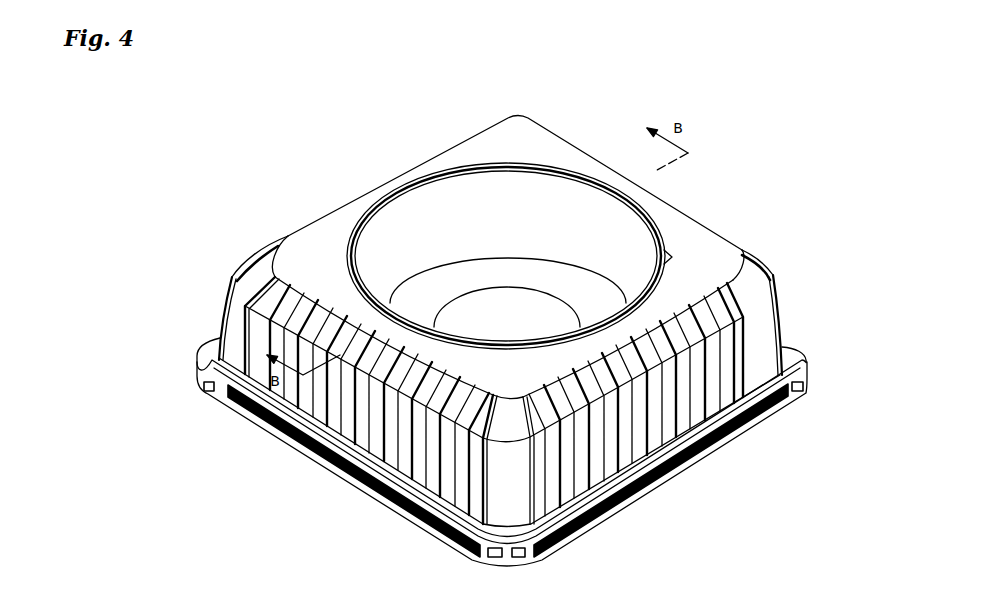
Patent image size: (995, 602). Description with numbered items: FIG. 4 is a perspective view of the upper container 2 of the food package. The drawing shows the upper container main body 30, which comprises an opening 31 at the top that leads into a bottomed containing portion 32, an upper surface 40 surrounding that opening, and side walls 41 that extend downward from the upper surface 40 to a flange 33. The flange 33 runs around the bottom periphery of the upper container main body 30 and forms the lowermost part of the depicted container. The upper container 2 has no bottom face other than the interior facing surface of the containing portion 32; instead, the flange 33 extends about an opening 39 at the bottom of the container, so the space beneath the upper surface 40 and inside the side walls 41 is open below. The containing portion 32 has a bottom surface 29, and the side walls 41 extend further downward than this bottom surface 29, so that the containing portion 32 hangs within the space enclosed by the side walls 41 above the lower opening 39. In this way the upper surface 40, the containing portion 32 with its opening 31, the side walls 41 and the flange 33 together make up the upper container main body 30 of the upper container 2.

The upper container 2 is at (303, 108).
The bottom surface 29 is at (511, 312).
The upper container main body 30 is at (323, 210).
The opening 31 is at (494, 190).
The bottomed containing portion 32 is at (447, 282).
The flange 33 is at (378, 487).
The opening 39 is at (690, 548).
The upper surface 40 is at (702, 237).
The side walls 41 is at (230, 292).